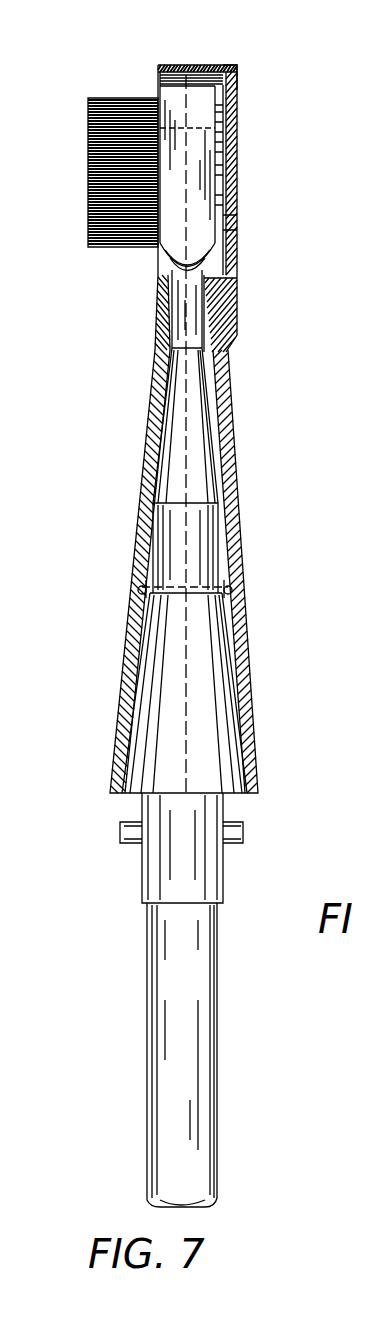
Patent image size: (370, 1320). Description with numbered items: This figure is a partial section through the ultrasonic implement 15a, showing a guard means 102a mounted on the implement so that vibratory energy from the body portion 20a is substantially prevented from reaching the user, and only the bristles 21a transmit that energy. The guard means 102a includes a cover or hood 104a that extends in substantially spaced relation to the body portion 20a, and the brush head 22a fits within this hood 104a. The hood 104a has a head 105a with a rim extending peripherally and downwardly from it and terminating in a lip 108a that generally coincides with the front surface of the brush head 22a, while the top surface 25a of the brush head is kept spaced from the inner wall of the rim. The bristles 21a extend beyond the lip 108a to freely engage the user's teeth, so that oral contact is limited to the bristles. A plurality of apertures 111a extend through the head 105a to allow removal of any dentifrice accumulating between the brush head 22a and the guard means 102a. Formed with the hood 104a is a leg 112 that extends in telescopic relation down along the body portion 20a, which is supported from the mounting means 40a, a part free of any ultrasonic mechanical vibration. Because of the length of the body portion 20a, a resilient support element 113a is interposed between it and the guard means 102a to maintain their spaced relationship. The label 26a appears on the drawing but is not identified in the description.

The guard means 102a is at (242, 263).
The top cap 26a is at (195, 65).
The lip 108a is at (157, 67).
The brush head 22a is at (187, 107).
The top surface 25a is at (217, 117).
The head 105a is at (237, 163).
The hood 104a is at (237, 63).
The apertures 111a is at (233, 223).
The bristles 21a is at (88, 203).
The body portion 20a is at (207, 478).
The resilient support element 113a is at (233, 590).
The mounting means 40a is at (217, 777).
The ultrasonic implement 15a is at (253, 700).
The leg 112 is at (238, 638).